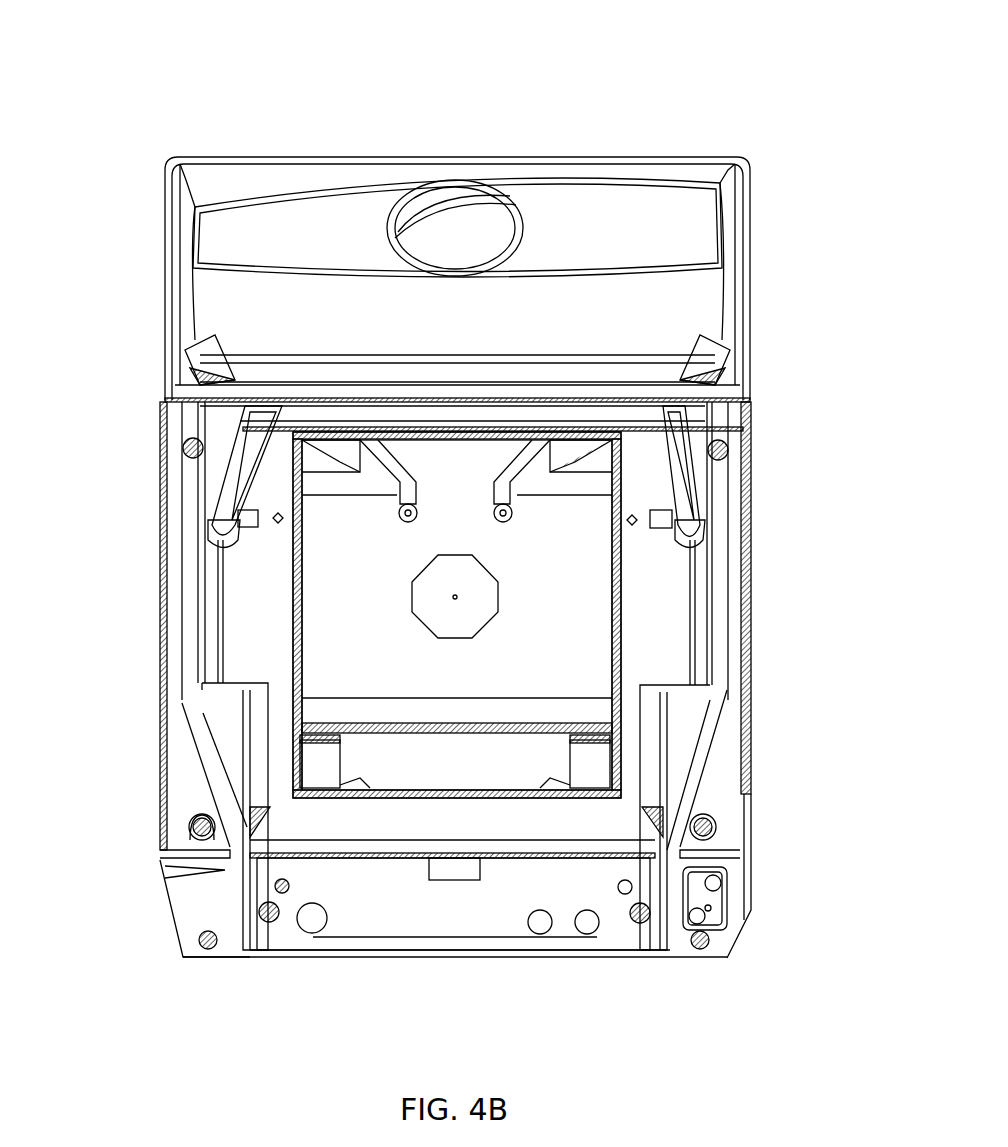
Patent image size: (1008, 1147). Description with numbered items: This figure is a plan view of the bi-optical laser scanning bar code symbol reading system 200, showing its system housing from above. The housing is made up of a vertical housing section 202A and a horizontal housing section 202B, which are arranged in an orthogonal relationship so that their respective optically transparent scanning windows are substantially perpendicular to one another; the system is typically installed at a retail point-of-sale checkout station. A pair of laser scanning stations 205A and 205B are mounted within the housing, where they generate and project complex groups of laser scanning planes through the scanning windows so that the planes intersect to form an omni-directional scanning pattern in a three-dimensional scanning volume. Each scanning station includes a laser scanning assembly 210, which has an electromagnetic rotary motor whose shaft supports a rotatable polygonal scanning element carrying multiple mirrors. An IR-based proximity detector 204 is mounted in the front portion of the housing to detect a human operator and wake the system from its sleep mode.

The bi-optical laser scanning bar code symbol reading system 200 is at (659, 98).
The vertical housing section 202A is at (268, 172).
The horizontal housing section 202B is at (753, 732).
The IR-based proximity detector 204 is at (456, 882).
The laser scanning station 205A is at (622, 378).
The laser scanning station 205B is at (557, 590).
The laser scanning assembly 210 is at (408, 592).